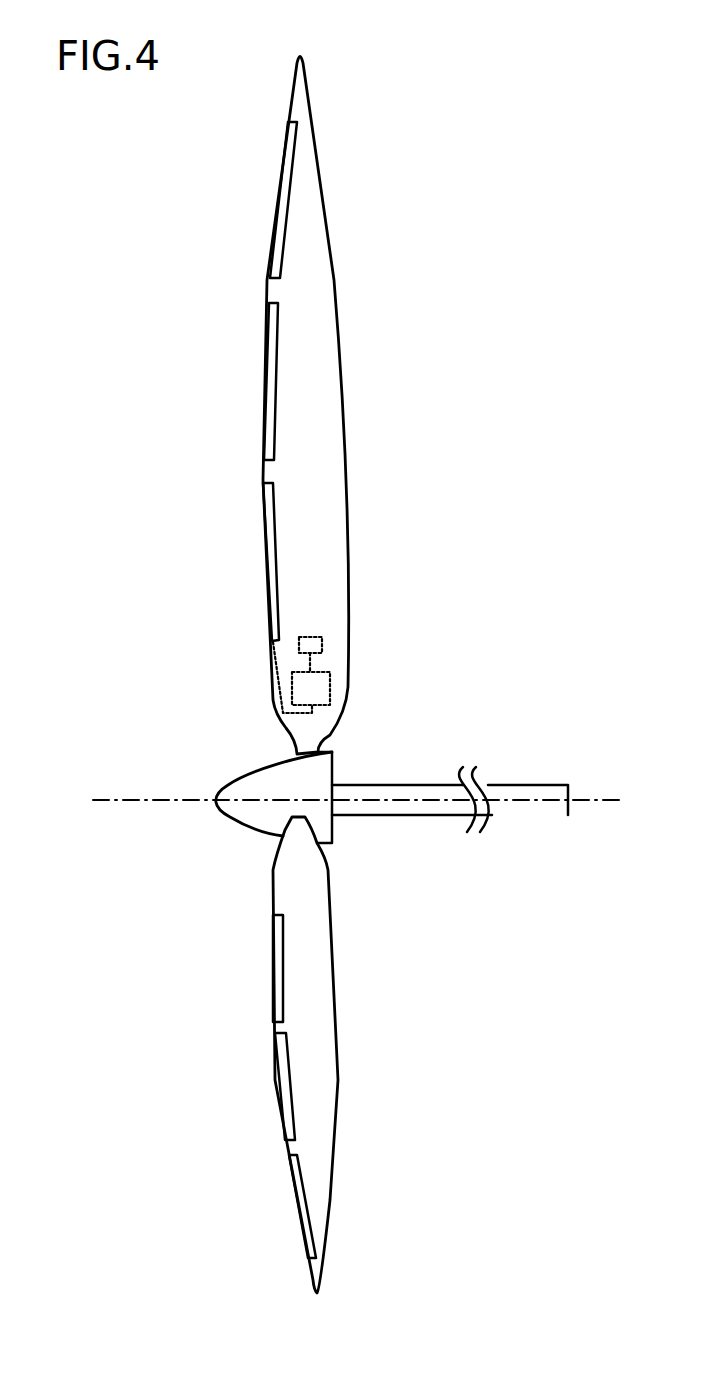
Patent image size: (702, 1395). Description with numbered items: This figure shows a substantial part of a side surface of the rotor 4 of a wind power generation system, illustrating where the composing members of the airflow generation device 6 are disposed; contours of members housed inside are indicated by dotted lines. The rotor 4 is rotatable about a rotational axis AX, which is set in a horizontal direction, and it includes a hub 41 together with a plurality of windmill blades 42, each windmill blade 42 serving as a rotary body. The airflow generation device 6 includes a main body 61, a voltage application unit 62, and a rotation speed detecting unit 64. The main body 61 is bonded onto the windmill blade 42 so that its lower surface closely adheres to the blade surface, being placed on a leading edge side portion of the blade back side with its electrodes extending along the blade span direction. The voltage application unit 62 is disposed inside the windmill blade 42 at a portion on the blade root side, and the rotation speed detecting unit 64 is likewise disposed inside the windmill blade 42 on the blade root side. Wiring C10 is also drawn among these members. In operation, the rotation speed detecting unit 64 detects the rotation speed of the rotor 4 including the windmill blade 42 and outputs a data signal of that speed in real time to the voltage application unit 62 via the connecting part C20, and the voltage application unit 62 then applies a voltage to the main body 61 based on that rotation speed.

The rotor 4 is at (187, 770).
The hub 41 is at (237, 813).
The windmill blade 42 is at (335, 395).
The airflow generation device 6 is at (359, 598).
The main body 61 is at (274, 607).
The voltage application unit 62 is at (356, 688).
The rotation speed detecting unit 64 is at (316, 645).
The wiring C10 is at (280, 690).
The connecting part C20 is at (307, 665).
The rotational axis AX is at (105, 802).